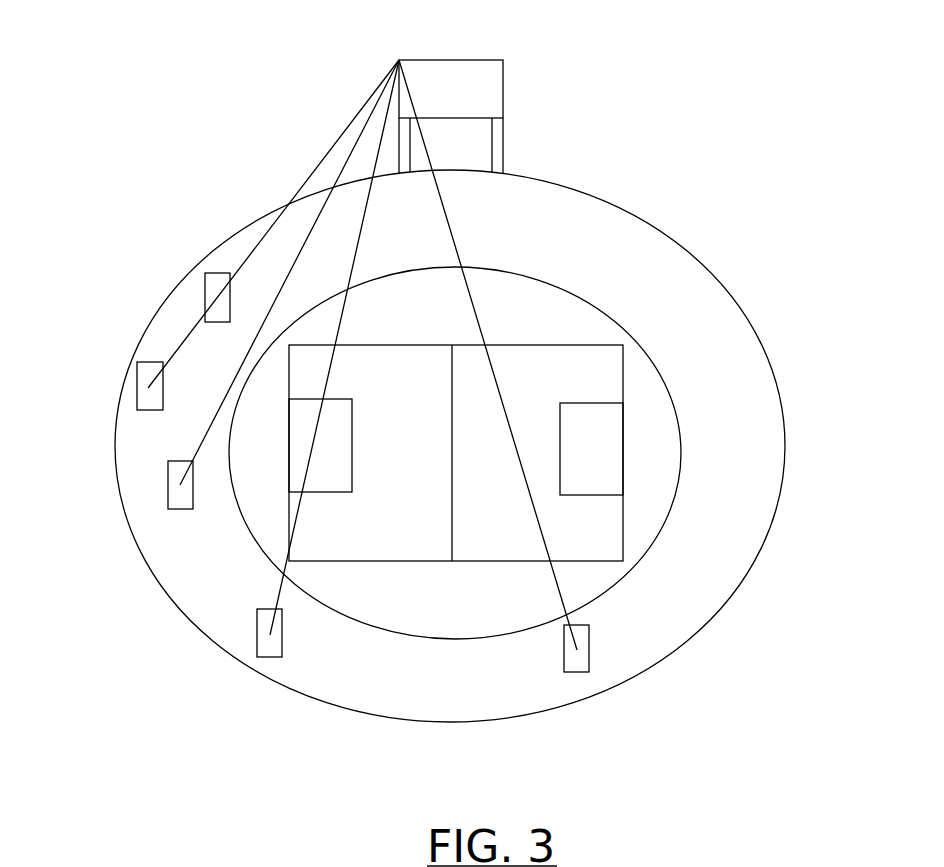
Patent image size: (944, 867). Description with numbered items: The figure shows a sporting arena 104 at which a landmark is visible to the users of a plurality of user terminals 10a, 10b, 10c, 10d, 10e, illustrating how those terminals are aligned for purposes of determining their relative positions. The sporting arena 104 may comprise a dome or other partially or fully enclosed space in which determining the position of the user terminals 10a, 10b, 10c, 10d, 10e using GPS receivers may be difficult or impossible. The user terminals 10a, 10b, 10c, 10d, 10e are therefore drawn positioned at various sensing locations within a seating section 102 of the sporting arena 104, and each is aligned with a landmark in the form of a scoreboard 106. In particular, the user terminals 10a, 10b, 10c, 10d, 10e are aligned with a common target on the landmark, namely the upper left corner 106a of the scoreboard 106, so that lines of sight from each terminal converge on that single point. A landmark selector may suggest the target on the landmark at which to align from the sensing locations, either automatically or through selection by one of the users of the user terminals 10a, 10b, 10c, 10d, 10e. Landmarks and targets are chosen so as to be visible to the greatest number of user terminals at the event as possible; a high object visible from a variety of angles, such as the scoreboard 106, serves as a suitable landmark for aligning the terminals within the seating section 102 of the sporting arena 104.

The seating section 102 is at (537, 453).
The sporting arena 104 is at (451, 446).
The scoreboard 106 is at (501, 98).
The upper left corner 106a is at (362, 336).
The user terminal 10a is at (167, 283).
The user terminal 10b is at (129, 478).
The user terminal 10c is at (319, 621).
The user terminal 10d is at (626, 639).
The user terminal 10e is at (100, 373).